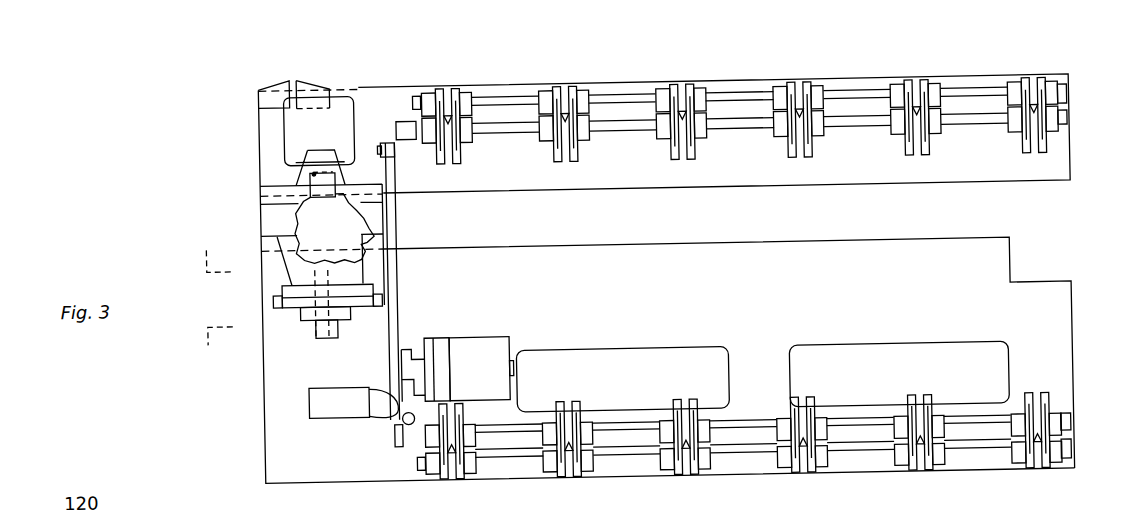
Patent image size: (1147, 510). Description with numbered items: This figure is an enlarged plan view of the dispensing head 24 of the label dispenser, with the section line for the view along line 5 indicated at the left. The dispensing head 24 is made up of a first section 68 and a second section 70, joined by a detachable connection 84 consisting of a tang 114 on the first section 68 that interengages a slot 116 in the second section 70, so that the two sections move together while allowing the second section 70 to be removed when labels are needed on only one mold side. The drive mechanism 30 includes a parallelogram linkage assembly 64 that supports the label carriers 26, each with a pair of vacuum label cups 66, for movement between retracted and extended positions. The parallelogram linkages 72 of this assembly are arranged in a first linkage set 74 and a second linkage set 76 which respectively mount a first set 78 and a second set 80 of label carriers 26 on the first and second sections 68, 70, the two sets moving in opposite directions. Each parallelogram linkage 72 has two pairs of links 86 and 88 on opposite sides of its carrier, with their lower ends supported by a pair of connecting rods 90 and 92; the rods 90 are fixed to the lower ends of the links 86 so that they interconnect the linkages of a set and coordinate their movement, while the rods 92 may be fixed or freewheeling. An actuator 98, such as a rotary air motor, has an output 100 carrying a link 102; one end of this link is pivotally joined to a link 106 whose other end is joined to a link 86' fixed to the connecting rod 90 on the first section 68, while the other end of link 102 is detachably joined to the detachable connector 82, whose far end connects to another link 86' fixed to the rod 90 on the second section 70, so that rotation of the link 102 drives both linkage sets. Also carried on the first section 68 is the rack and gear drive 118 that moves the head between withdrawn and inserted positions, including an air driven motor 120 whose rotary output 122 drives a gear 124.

The section line 5- 5 is at (238, 152).
The dispensing head 24 is at (757, 76).
The label carriers 26 is at (568, 157).
The drive mechanism 30 is at (400, 281).
The parallelogram linkage assembly 64 is at (1045, 62).
The label cups 66 is at (565, 107).
The first section of dispensing head 68 is at (1075, 342).
The second section of dispensing head 70 is at (1076, 162).
The parallelogram linkages 72 is at (545, 144).
The first linkage set 74 is at (1070, 402).
The second linkage set 76 is at (1071, 124).
The first set of label carriers 78 is at (1055, 392).
The second set of label carriers 80 is at (1052, 167).
The detachable connector 82 is at (395, 331).
The detachable connection 84 is at (298, 195).
The links 86 is at (745, 276).
The link 86' is at (373, 252).
The links 88 is at (662, 98).
The connecting rod 90 is at (730, 96).
The connecting rod 92 is at (720, 118).
The actuator 98 is at (480, 341).
The output 100 is at (412, 358).
The link 102 is at (400, 340).
The link 106 is at (400, 362).
The tang 114 is at (328, 180).
The slot 116 is at (315, 167).
The rack and gear drive 118 is at (298, 249).
The motor 120 is at (398, 267).
The rotary output 122 is at (322, 333).
The gear 124 is at (292, 300).